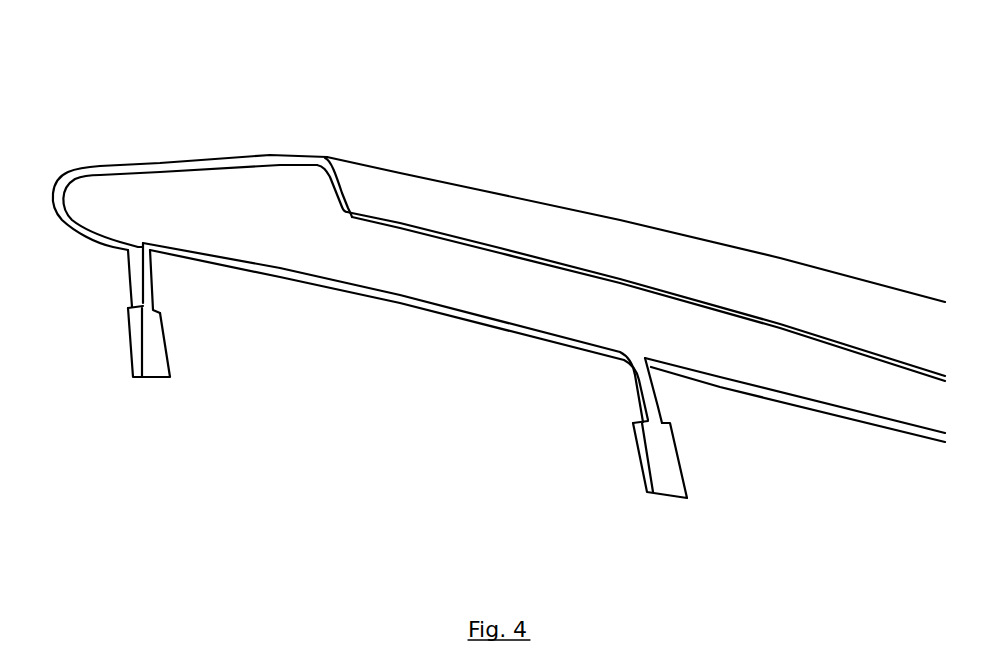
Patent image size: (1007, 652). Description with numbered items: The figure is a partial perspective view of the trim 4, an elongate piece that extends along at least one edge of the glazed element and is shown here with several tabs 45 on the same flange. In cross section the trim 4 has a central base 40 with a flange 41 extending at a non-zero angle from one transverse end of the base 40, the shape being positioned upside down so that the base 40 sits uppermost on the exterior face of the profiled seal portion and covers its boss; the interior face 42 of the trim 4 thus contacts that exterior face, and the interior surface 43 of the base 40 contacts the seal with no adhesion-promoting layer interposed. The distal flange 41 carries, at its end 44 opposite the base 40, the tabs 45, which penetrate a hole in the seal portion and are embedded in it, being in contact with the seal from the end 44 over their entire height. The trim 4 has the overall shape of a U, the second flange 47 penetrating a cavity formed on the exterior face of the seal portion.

The trim 4 is at (204, 66).
The base 40 is at (197, 160).
The flange 41 is at (292, 230).
The interior face 42 is at (842, 277).
The interior surface 43 is at (132, 185).
The end of the flange 44 is at (413, 307).
The tab 45 is at (153, 363).
The second flange 47 is at (530, 223).